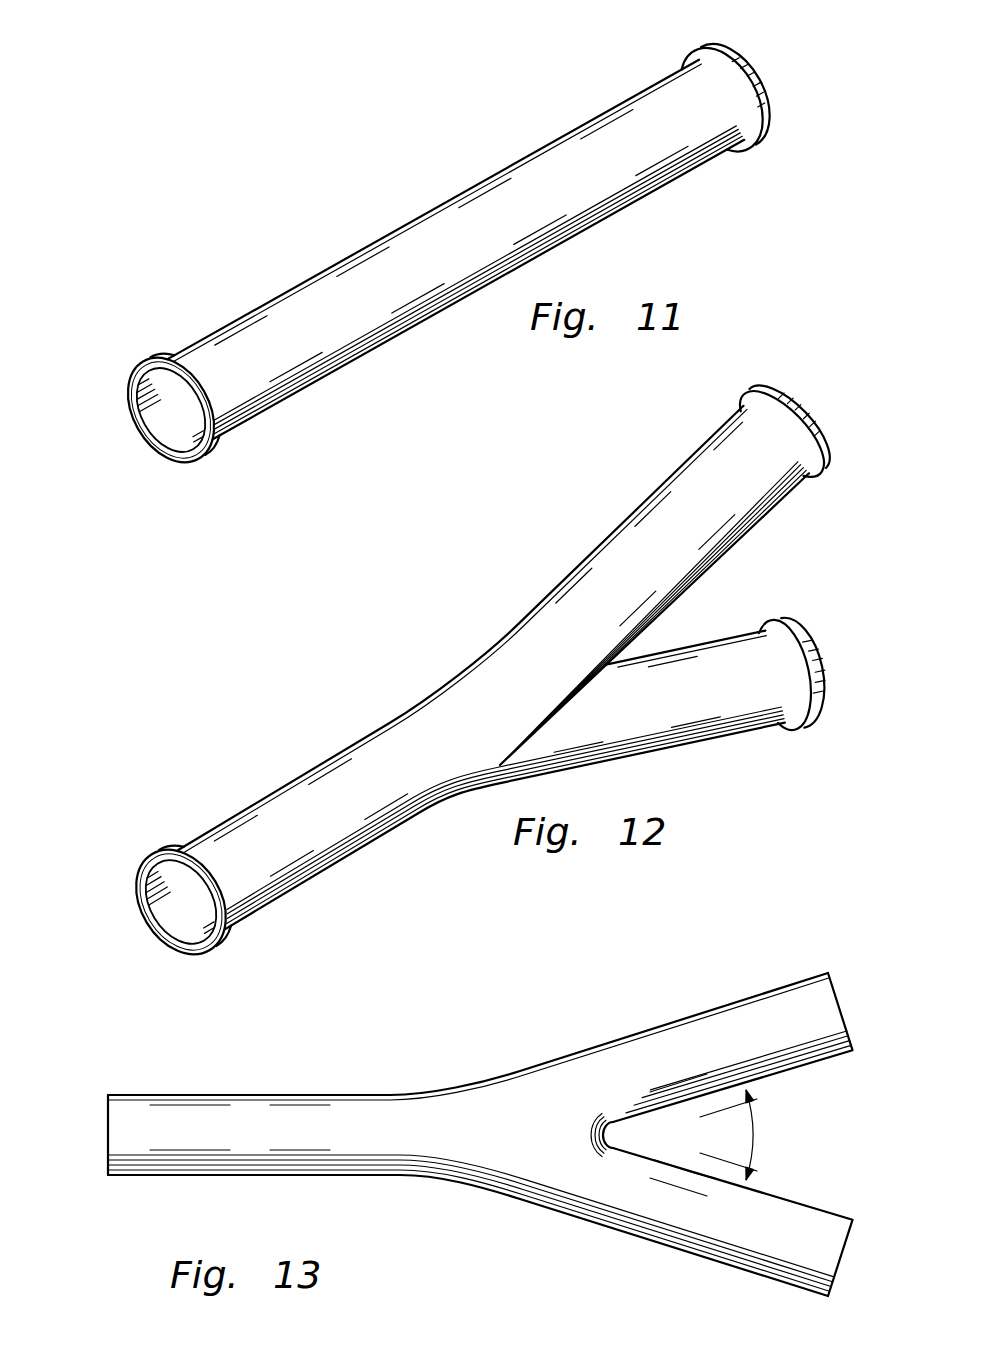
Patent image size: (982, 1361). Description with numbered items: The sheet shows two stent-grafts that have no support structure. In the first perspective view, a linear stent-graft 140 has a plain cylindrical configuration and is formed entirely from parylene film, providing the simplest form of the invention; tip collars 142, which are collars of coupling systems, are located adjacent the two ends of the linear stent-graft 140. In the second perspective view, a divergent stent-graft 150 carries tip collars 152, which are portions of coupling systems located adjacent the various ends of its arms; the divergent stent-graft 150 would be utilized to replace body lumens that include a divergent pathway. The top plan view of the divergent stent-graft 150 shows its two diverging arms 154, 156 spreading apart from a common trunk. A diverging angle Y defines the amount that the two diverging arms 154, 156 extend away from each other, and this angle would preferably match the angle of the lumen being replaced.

In FIG. 11, the linear stent-graft 140 is at (238, 240).
In FIG. 11, the tip collars 142 is at (130, 388).
In FIG. 12, the divergent stent-graft 150 is at (346, 716).
In FIG. 13, the divergent stent-graft 150 is at (480, 1126).
In FIG. 12, the tip collars 152 is at (145, 868).
In FIG. 13, the diverging arm 154 is at (752, 1013).
In FIG. 13, the diverging arm 156 is at (714, 1243).
In FIG. 13, the diverging angle Y is at (756, 1142).